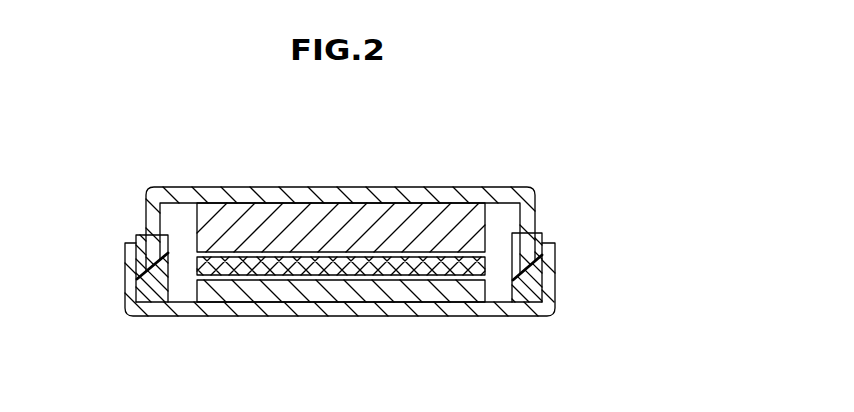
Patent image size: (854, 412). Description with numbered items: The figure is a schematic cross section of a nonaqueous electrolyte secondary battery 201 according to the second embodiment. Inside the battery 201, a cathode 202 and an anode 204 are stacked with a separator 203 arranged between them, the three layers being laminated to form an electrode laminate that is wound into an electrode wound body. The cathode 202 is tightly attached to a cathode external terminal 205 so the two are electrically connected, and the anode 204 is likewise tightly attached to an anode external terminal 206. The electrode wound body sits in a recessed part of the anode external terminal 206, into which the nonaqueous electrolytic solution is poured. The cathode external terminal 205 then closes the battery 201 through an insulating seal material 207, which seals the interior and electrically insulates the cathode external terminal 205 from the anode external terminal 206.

The battery 201 is at (608, 140).
The cathode 202 is at (272, 220).
The separator 203 is at (315, 266).
The anode 204 is at (260, 292).
The cathode external terminal 205 is at (368, 197).
The anode external terminal 206 is at (397, 310).
The insulating seal material 207 is at (136, 276).